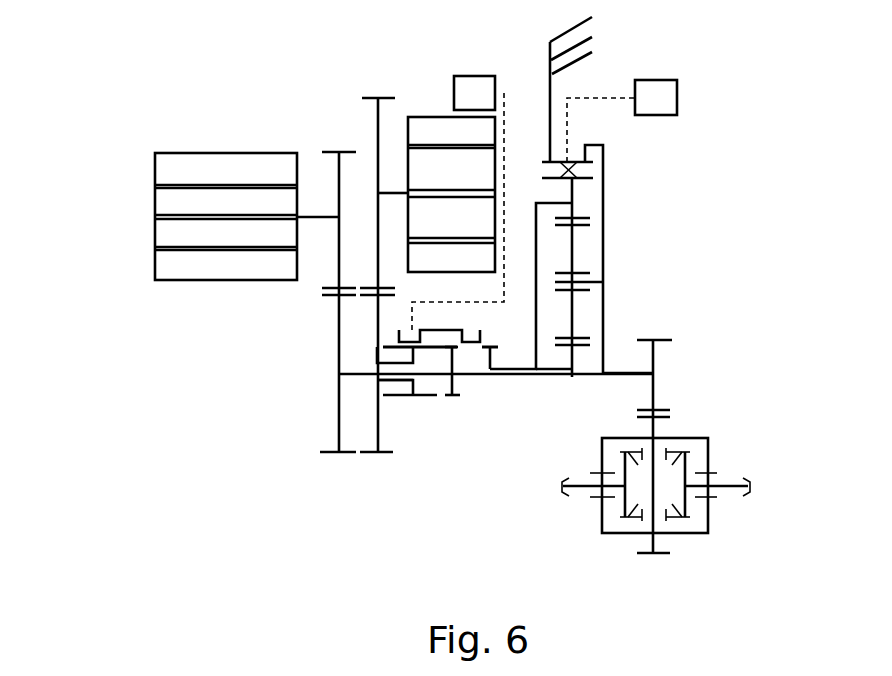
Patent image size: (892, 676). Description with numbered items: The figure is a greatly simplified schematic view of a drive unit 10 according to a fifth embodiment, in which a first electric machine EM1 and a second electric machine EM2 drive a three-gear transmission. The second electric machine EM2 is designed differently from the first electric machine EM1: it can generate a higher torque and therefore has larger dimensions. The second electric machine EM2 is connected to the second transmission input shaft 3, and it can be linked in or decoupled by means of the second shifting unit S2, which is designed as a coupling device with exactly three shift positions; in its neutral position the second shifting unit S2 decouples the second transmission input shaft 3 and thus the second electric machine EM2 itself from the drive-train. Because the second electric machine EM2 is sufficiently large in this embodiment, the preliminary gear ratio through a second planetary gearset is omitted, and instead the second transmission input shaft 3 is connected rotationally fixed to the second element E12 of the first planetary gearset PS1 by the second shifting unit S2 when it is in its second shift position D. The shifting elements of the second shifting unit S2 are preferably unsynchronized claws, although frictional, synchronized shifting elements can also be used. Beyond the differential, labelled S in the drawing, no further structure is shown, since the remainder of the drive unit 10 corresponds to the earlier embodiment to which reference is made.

The drive unit 10 is at (120, 95).
The first electric machine EM1 is at (217, 133).
The second electric machine EM2 is at (425, 107).
The second element of the first planetary gearset E12 is at (575, 211).
The second shift position of the second shifting unit D is at (494, 336).
The second transmission input shaft 3 is at (397, 400).
The second shifting unit S2 is at (469, 406).
The first planetary gearset PS1 is at (563, 394).
The differential / output S is at (723, 567).